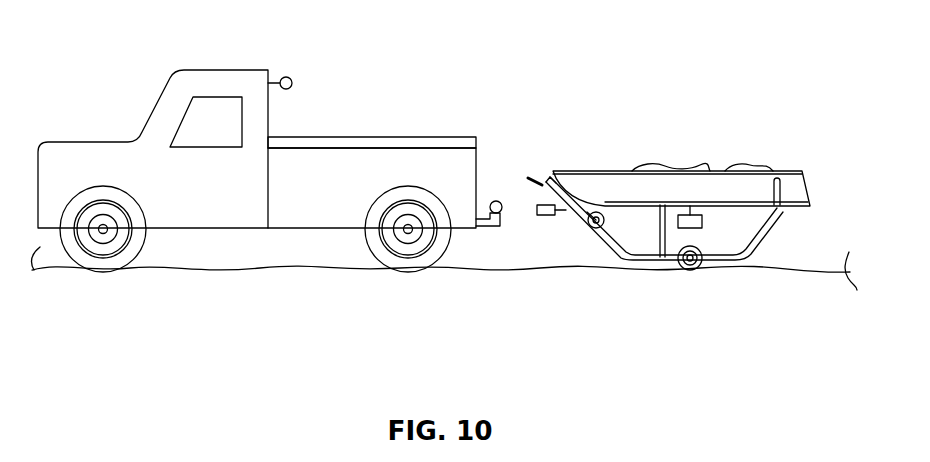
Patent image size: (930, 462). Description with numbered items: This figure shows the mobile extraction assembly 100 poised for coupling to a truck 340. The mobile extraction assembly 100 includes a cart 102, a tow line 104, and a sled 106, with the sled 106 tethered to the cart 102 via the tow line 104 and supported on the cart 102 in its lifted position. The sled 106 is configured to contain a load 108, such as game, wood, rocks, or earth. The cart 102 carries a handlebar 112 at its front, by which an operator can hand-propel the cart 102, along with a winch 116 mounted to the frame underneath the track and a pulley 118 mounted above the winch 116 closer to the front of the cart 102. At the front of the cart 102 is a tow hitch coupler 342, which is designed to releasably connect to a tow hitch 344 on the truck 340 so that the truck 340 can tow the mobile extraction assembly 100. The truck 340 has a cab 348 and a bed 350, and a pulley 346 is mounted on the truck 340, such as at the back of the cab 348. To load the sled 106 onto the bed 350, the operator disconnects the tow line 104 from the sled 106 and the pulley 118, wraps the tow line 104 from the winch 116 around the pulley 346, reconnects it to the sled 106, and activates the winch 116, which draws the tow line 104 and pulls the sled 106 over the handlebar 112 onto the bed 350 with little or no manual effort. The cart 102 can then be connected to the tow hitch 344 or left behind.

The truck 340 is at (100, 99).
The cab 348 is at (208, 82).
The pulley 346 is at (288, 77).
The bed 350 is at (348, 192).
The tow hitch 344 is at (489, 232).
The mobile extraction assembly 100 is at (618, 108).
The cart 102 is at (757, 247).
The tow line 104 is at (547, 177).
The sled 106 is at (720, 195).
The load 108 is at (678, 167).
The handlebar 112 is at (532, 177).
The winch 116 is at (600, 230).
The pulley 118 is at (537, 186).
The tow hitch coupler 342 is at (544, 216).